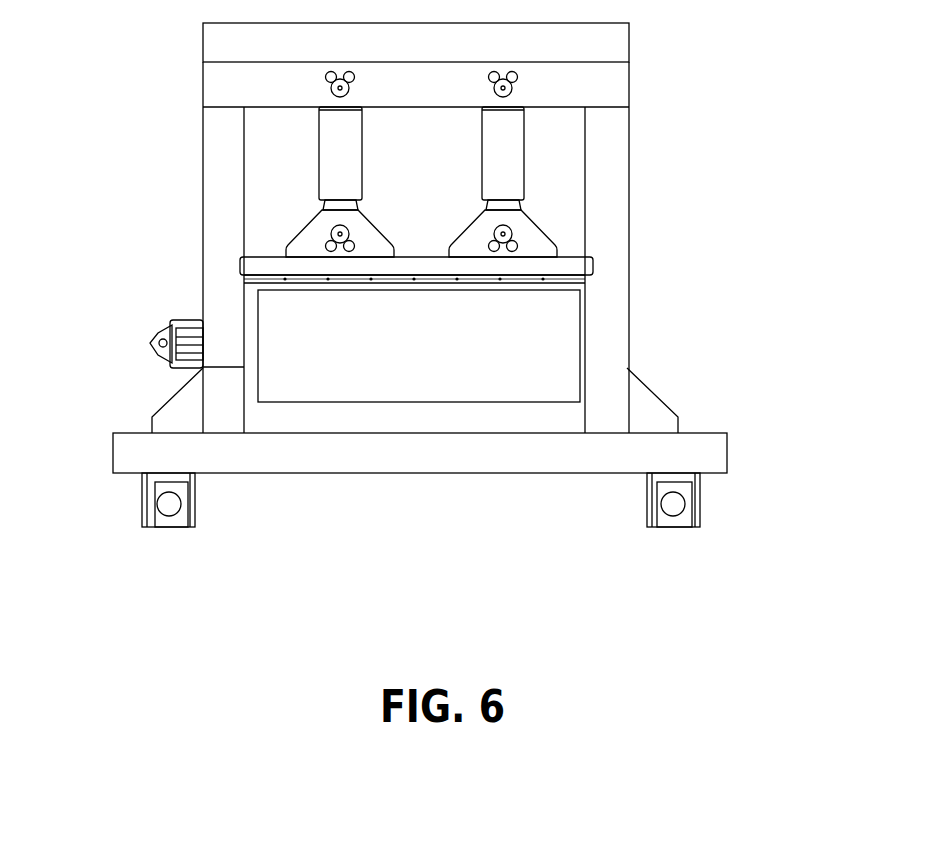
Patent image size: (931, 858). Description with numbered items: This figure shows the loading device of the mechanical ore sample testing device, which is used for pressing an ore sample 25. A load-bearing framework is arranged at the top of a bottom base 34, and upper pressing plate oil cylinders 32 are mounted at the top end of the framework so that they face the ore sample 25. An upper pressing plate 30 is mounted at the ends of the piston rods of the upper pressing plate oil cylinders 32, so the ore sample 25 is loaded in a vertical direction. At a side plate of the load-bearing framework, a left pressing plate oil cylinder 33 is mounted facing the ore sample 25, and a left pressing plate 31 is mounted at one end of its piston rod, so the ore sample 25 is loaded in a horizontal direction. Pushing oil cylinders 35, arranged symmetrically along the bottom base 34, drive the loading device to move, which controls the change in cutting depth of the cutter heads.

The ore sample 25 is at (567, 340).
The upper pressing plate 30 is at (557, 262).
The left pressing plate 31 is at (252, 335).
The upper pressing plate oil cylinders 32 is at (515, 125).
The left pressing plate oil cylinder 33 is at (175, 340).
The bottom base 34 is at (685, 457).
The pushing oil cylinders 35 is at (173, 510).